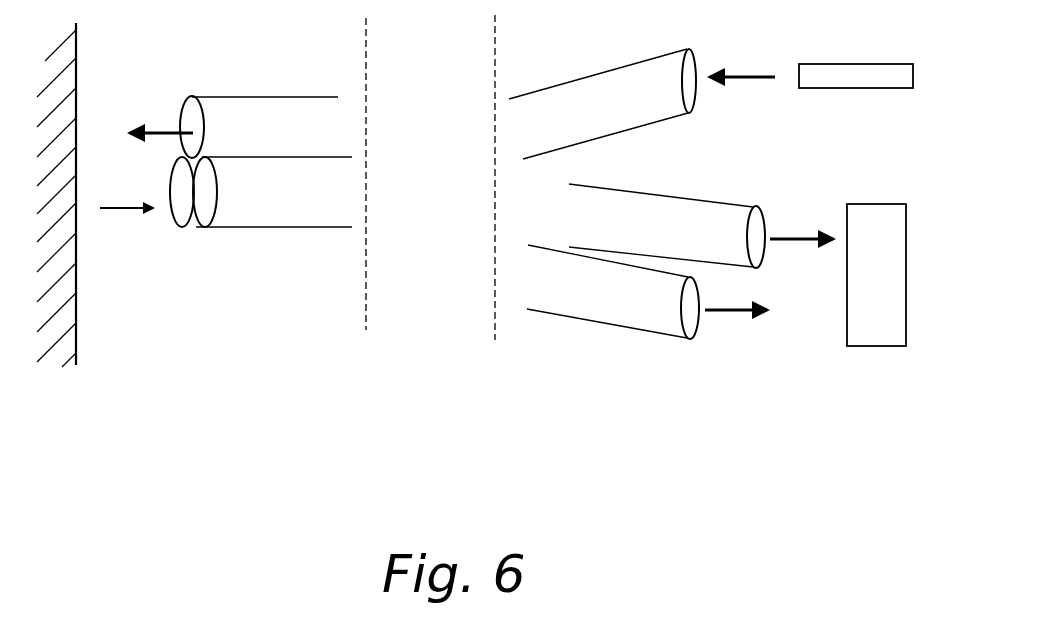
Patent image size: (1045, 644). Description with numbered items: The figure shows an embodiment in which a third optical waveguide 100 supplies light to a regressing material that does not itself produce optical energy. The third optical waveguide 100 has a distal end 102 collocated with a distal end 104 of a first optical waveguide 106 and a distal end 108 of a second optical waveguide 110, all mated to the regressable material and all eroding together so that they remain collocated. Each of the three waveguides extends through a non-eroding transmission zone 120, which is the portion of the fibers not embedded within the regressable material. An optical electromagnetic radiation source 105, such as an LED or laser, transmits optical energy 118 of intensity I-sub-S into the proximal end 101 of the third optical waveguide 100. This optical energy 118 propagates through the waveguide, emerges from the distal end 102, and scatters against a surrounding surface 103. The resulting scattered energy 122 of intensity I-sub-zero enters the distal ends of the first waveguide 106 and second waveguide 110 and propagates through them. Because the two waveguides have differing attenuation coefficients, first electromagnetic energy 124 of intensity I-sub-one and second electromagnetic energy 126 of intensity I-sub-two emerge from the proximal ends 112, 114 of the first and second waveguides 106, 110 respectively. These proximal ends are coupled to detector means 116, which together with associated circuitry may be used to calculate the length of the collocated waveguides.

The third optical waveguide 100 is at (293, 141).
The proximal end of the third optical waveguide 101 is at (690, 62).
The distal end of the third optical waveguide 102 is at (187, 110).
The surrounding surface 103 is at (77, 77).
The distal end of the first optical waveguide 104 is at (170, 183).
The optical electromagnetic radiation source 105 is at (851, 62).
The first optical waveguide 106 is at (192, 228).
The distal end of the second optical waveguide 108 is at (205, 228).
The second optical waveguide 110 is at (293, 209).
The proximal end of the first optical waveguide 112 is at (757, 222).
The proximal end of the second optical waveguide 114 is at (690, 329).
The detector means 116 is at (893, 284).
The optical energy 118 is at (733, 80).
The non-eroding transmission zone 120 is at (453, 197).
The scattered energy 122 is at (138, 215).
The first electromagnetic energy 124 is at (780, 245).
The second electromagnetic energy 126 is at (740, 318).